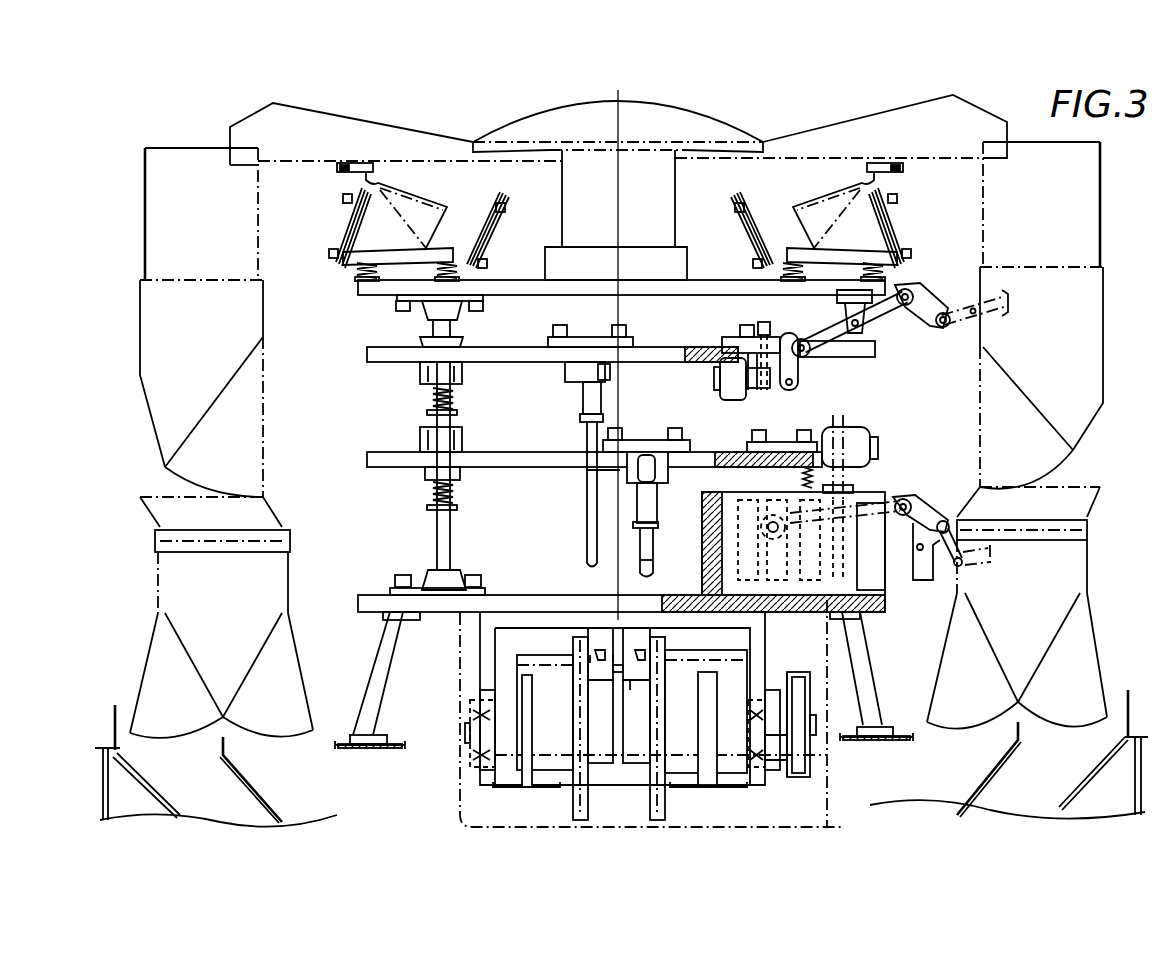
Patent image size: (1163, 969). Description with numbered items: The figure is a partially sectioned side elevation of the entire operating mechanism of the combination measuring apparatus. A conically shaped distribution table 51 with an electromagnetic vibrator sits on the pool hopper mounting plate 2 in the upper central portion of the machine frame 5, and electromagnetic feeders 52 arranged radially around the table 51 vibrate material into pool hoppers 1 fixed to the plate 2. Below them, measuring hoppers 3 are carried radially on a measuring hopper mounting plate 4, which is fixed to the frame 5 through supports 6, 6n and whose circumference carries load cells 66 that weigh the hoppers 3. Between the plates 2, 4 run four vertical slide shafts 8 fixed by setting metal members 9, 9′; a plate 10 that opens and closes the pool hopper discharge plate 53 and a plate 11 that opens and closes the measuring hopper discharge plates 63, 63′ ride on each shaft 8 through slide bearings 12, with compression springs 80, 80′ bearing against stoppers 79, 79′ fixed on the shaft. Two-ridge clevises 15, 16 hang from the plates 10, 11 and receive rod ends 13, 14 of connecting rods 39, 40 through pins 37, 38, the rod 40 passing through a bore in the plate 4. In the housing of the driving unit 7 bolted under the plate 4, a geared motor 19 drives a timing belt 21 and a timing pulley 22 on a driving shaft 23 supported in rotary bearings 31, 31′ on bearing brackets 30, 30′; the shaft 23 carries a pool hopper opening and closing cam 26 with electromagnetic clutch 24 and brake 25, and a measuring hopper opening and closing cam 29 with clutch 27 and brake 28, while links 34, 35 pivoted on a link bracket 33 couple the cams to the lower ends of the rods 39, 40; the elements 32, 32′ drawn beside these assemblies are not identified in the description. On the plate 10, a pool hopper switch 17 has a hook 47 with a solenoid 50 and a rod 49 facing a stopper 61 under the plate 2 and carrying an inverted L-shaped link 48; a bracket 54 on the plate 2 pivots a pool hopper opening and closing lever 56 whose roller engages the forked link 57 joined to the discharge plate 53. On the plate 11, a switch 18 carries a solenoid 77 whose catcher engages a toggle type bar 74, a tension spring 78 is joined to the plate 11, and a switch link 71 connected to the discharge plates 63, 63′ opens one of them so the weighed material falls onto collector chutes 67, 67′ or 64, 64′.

The pool hopper 1 is at (985, 336).
The pool hopper mounting plate 2 is at (668, 286).
The measuring hopper 3 is at (1075, 566).
The measuring hopper mounting plate 4 is at (504, 598).
The machine frame 5 is at (107, 800).
The support 6n is at (378, 672).
The support 6 is at (862, 642).
The driving unit 7 is at (818, 828).
The slide shaft 8 is at (447, 522).
The setting metal member 9 is at (395, 304).
The setting metal member 9′ is at (425, 575).
The plate for opening and closing the pool hopper discharge plate 10 is at (500, 347).
The plate for opening and closing the measuring hopper discharge plates 11 is at (500, 452).
The slide bearing 12 is at (420, 377).
The rod end 13 is at (583, 408).
The rod end 14 is at (640, 508).
The two-ridge clevis 15 is at (606, 384).
The two-ridge clevis 16 is at (660, 603).
The pool hopper switch 17 is at (722, 340).
The measuring hopper switch 18 is at (784, 444).
The geared motor 19 is at (503, 660).
The timing belt 21 is at (807, 778).
The timing pulley 22 is at (816, 690).
The driving shaft 23 is at (817, 718).
The electromagnetic clutch 24 is at (524, 790).
The electromagnetic brake 25 is at (597, 720).
The pool hopper opening and closing cam 26 is at (577, 805).
The electromagnetic clutch 27 is at (712, 795).
The electromagnetic brake 28 is at (640, 708).
The measuring hopper opening and closing cam 29 is at (652, 808).
The bearing bracket 30 is at (478, 770).
The bearing bracket 30′ is at (752, 777).
The rotary bearing 31 is at (470, 745).
The rotary bearing 31′ is at (768, 757).
The cam follower 32 is at (612, 775).
The second cam follower 32′ is at (630, 770).
The link bracket 33 is at (660, 655).
The link 34 is at (598, 658).
The link 35 is at (613, 655).
The pin 37 is at (566, 374).
The pin 38 is at (623, 472).
The connecting rod 39 is at (586, 478).
The connecting rod 40 is at (650, 560).
The hook 47 is at (803, 340).
The inverted L-shaped link 48 is at (768, 390).
The rod 49 is at (766, 326).
The solenoid 50 is at (728, 400).
The distribution table 51 is at (718, 120).
The electromagnetic feeder 52 is at (944, 160).
The discharge plate of the pool hopper 53 is at (1027, 400).
The bracket 54 is at (868, 332).
The pool hopper opening and closing lever 56 is at (798, 358).
The pool opening and closing link 57 is at (935, 300).
The stopper 61 is at (770, 296).
The discharge plate of the measuring hopper 63 is at (990, 638).
The discharge plate of the measuring hopper 63′ is at (1060, 640).
The collector chute 64 is at (1072, 797).
The collector chute 64′ is at (168, 808).
The load cell 66 is at (865, 490).
The collector chute 67 is at (985, 773).
The collector chute 67′ is at (268, 795).
The switch link 71 is at (920, 504).
The toggle type bar 74 is at (838, 426).
The solenoid 77 is at (862, 432).
The tension spring 78 is at (803, 480).
The stopper 79 is at (427, 508).
The stopper 79′ is at (458, 414).
The compression spring 80 is at (431, 494).
The compression spring 80′ is at (431, 399).